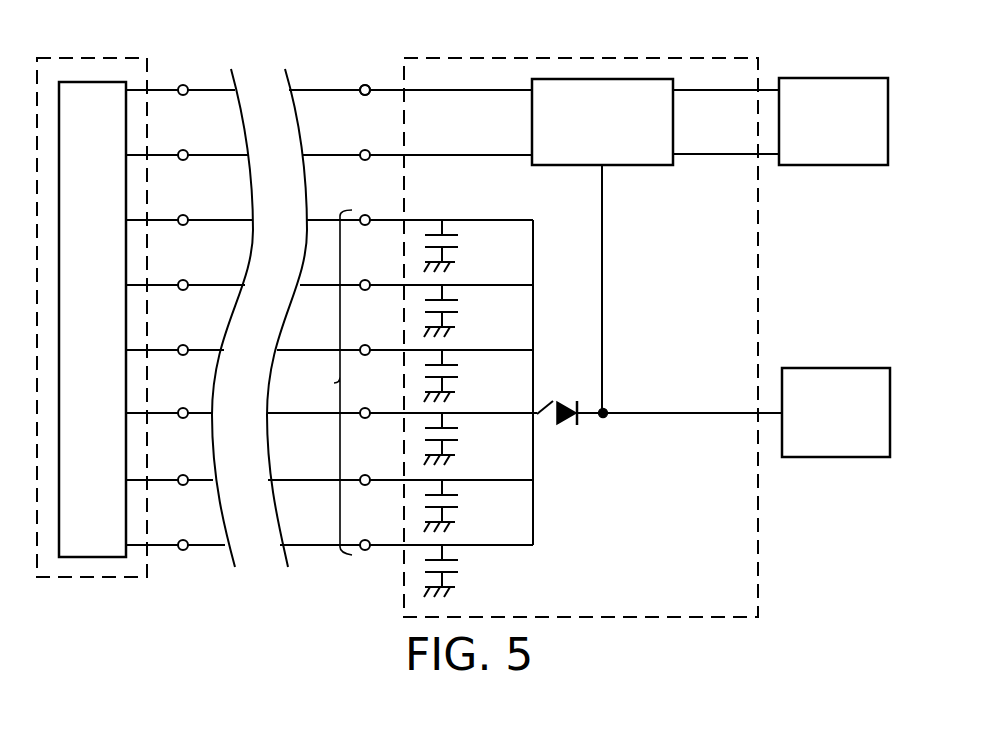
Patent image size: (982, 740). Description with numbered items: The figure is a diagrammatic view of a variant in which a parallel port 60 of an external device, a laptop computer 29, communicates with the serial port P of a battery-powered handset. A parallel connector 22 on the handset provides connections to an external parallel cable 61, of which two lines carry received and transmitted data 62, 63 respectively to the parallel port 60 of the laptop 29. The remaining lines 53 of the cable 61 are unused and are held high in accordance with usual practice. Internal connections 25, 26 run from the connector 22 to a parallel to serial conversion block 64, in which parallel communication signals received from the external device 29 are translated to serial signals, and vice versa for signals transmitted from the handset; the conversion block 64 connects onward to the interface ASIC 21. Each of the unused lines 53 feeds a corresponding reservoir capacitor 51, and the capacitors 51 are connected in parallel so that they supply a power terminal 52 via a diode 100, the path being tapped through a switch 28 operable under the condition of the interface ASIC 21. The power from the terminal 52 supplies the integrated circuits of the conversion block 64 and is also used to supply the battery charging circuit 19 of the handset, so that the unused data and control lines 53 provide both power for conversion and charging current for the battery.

The battery charging circuit 19 is at (836, 412).
The interface ASIC 21 is at (833, 121).
The parallel connector 22 is at (366, 86).
The conductor 25 is at (461, 92).
The conductor 26 is at (461, 157).
The switch 28 is at (547, 400).
The laptop computer 29 is at (141, 584).
The reservoir capacitor 51 is at (453, 250).
The power terminal 52 is at (606, 417).
The unused lines 53 is at (326, 382).
The parallel port 60 is at (92, 319).
The parallel cable 61 is at (176, 564).
The received data line 62 is at (346, 92).
The transmitted data line 63 is at (346, 157).
The parallel to serial conversion block 64 is at (602, 246).
The diode 100 is at (572, 428).
The serial port P is at (708, 46).